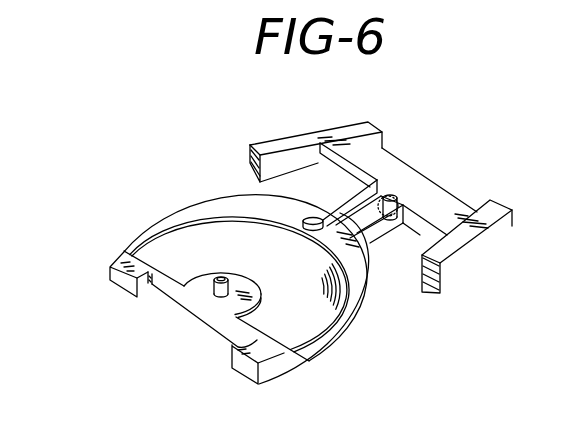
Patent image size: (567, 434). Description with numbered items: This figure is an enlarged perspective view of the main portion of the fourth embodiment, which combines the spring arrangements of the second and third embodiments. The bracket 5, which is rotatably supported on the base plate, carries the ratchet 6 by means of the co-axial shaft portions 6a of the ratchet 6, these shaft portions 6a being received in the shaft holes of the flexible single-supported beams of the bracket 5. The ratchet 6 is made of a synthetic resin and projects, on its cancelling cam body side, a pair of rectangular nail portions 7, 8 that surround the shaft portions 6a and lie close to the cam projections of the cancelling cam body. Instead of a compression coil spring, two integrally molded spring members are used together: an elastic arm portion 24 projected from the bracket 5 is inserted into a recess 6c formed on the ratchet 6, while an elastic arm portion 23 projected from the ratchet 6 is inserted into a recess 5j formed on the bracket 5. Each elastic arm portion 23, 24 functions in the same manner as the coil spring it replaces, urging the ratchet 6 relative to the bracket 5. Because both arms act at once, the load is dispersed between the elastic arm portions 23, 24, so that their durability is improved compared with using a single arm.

The bracket 5 is at (302, 140).
The recess 5j is at (386, 201).
The ratchet 6 is at (161, 216).
The shaft portions 6a is at (222, 276).
The recess 6c is at (313, 213).
The nail portion 7 is at (120, 289).
The nail portion 8 is at (247, 370).
The elastic arm portion 23 is at (373, 229).
The elastic arm portion 24 is at (348, 191).